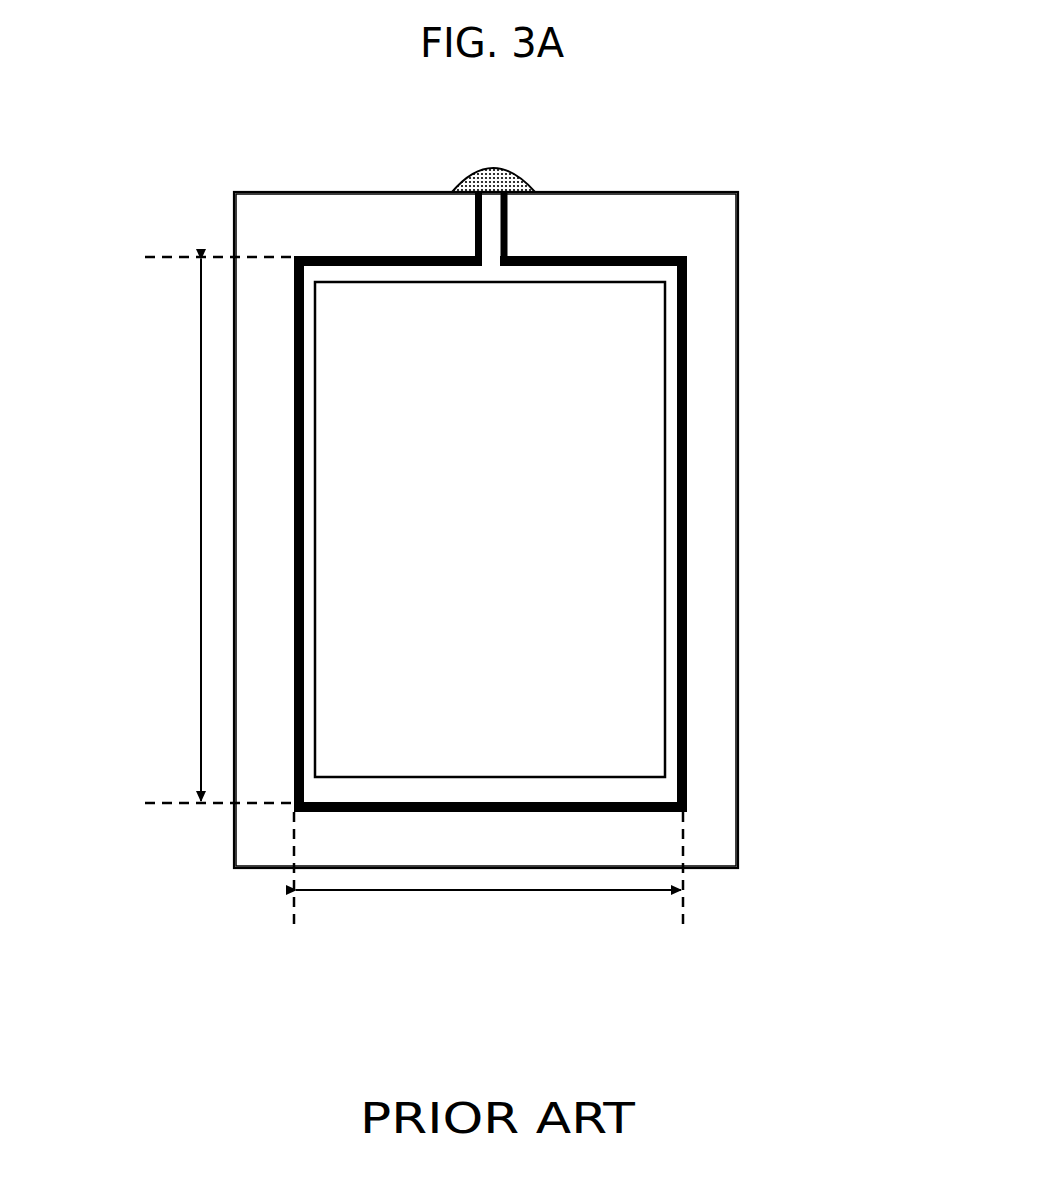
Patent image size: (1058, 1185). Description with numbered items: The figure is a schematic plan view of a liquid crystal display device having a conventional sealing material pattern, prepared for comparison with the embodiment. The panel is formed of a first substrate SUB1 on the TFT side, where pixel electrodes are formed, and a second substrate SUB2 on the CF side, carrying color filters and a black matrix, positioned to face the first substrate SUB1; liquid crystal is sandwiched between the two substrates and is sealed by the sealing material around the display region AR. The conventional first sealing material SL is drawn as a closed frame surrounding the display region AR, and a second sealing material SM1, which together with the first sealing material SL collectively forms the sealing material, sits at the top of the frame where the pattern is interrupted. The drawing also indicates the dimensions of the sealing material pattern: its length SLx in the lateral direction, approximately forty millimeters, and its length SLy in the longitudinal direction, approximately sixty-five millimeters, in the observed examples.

The first substrate SUB1 is at (740, 676).
The second substrate SUB2 is at (713, 312).
The first sealing material SL is at (688, 418).
The display region AR is at (633, 551).
The second sealing material SM1 is at (515, 186).
The length of the sealing material pattern in the longitudinal direction SLy is at (220, 530).
The length of the sealing material pattern in the lateral direction SLx is at (488, 873).